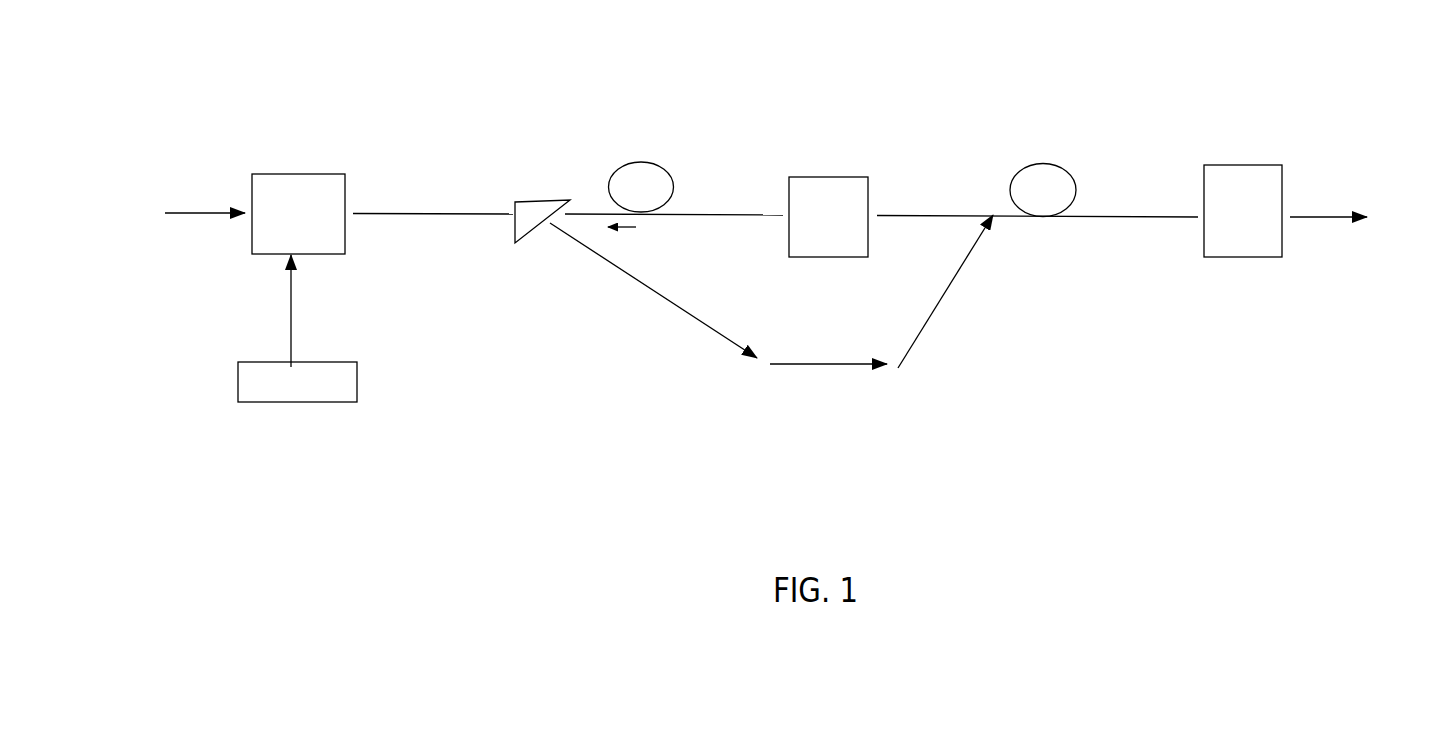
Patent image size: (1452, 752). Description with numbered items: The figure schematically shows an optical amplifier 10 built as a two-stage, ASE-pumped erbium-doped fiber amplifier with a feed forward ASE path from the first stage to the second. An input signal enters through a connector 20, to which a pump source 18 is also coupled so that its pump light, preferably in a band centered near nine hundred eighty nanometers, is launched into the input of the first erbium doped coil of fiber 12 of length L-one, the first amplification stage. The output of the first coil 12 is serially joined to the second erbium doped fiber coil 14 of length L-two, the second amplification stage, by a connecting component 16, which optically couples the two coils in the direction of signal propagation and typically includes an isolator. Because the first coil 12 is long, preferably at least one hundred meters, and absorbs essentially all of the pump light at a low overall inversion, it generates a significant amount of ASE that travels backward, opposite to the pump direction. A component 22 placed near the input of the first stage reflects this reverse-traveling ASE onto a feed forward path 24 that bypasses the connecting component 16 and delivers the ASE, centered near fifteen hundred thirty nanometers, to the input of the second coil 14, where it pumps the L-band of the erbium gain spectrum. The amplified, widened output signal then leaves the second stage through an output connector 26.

The optical amplifier 10 is at (795, 126).
The first erbium doped coil of fiber 12 is at (645, 172).
The second erbium doped fiber coil 14 is at (1047, 169).
The connecting component 16 is at (827, 174).
The pump source 18 is at (314, 350).
The connector 20 is at (315, 186).
The component (ASE reflector) 22 is at (570, 183).
The feed forward path 24 is at (771, 317).
The connector 26 is at (1267, 190).